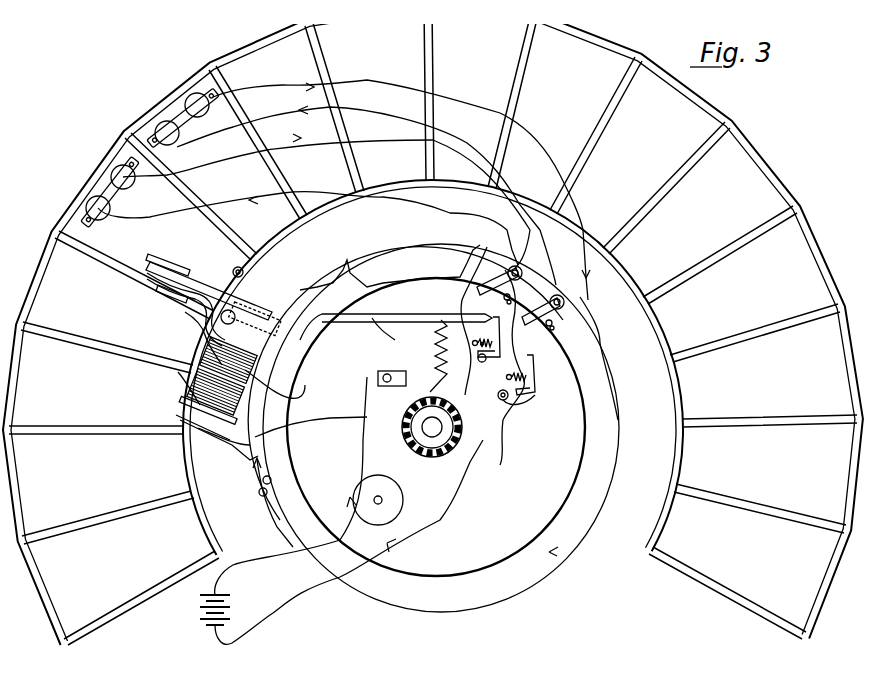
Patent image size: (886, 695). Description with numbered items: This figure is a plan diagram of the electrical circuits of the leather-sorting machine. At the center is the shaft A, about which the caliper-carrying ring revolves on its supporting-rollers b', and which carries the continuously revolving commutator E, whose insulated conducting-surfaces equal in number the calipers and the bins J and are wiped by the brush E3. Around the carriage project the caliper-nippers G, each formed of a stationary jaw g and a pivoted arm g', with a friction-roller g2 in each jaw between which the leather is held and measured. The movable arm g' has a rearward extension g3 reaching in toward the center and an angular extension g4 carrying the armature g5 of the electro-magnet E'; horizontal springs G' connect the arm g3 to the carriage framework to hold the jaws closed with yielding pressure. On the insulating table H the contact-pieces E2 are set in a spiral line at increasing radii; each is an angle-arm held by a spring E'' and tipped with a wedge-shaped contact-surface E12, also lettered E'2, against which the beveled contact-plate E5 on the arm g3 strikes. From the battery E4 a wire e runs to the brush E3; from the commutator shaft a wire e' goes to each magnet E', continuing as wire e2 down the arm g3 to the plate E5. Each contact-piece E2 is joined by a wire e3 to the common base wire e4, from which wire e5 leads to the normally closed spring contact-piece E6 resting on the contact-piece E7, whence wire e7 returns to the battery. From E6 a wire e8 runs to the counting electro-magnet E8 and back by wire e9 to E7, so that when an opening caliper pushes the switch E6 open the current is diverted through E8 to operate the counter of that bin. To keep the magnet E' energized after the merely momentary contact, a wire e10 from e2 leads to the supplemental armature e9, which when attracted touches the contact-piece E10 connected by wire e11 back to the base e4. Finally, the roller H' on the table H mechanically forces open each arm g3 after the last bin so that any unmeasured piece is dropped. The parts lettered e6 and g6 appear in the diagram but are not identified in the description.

The bins J is at (433, 322).
The table H is at (436, 462).
The roller H' is at (390, 500).
The shaft A is at (445, 430).
The commutator E is at (433, 383).
The electro-magnet E' is at (220, 408).
The spring E'' is at (531, 367).
The contact-pieces E2 is at (505, 352).
The wedge-shaped contact-surface E'2 is at (582, 359).
The brush E3 is at (440, 384).
The battery E4 is at (199, 610).
The contact-plate E5 is at (434, 350).
The spring contact-piece E6 is at (470, 280).
The contact-piece E7 is at (603, 334).
The electro-magnet E8 is at (177, 113).
The contact-piece E10 is at (180, 410).
The wedge-shaped contact-surface E12 is at (480, 321).
The wire e is at (349, 510).
The wire e' is at (368, 393).
The wire e2 is at (305, 375).
The wire e3 is at (445, 275).
The common base wire e4 is at (405, 238).
The wire e5 is at (591, 358).
The wire e6 is at (510, 245).
The wire e7 is at (420, 525).
The wire e8 is at (150, 212).
The wire e9 is at (205, 160).
The wire e10 is at (282, 422).
The wire e11 is at (200, 430).
The caliper-nippers G is at (186, 309).
The springs G' is at (446, 372).
The stationary jaw g is at (209, 285).
The movable arm g' is at (186, 338).
The friction-roller g2 is at (180, 262).
The rearward extension g3 is at (383, 335).
The angular extension g4 is at (180, 380).
The armature g5 is at (178, 405).
The slot g6 is at (262, 302).
The supporting-rollers b' is at (262, 266).